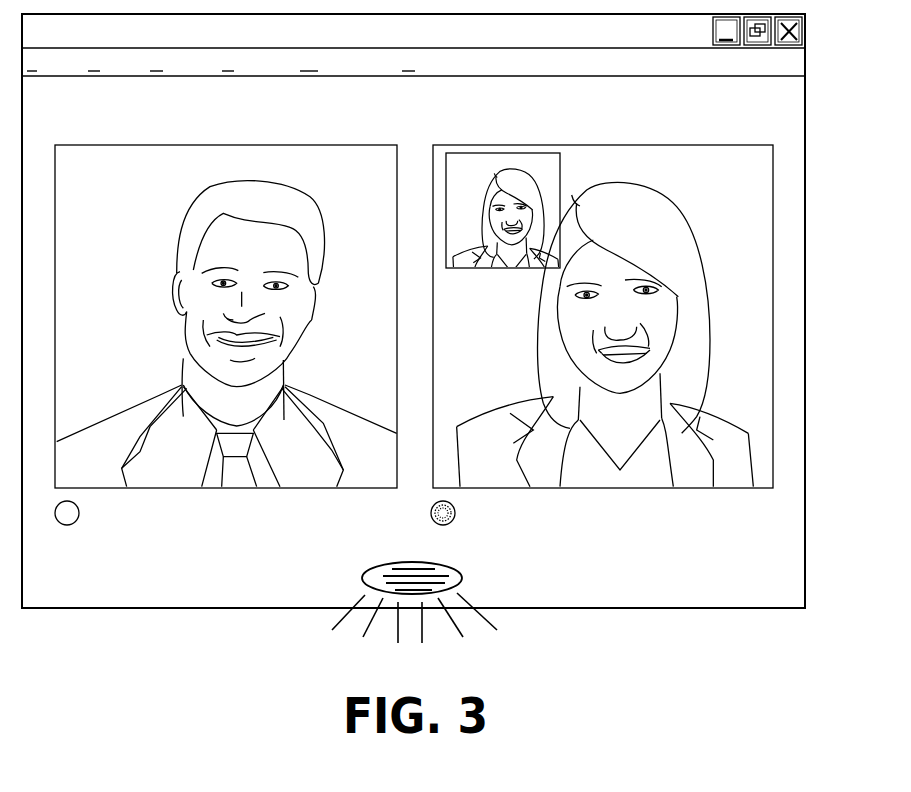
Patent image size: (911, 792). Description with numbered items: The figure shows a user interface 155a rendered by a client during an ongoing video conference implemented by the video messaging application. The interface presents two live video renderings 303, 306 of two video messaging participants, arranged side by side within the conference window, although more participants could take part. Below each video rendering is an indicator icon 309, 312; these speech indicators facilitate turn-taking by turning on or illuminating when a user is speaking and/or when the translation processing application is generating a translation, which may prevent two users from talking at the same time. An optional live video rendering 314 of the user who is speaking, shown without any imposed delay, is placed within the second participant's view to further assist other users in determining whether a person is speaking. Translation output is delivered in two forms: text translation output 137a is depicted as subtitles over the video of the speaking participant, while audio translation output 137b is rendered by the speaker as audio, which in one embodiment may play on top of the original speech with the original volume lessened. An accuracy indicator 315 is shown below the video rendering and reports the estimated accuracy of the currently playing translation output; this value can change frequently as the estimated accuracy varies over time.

The user interface 155a is at (705, 620).
The live video rendering 303 is at (228, 140).
The live video rendering 306 is at (600, 143).
The live video rendering of the speaking user 314 is at (530, 151).
The text translation output 137a is at (707, 433).
The indicator icon 309 is at (67, 525).
The indicator icon 312 is at (445, 527).
The accuracy indicator 315 is at (638, 530).
The audio translation output 137b is at (483, 637).